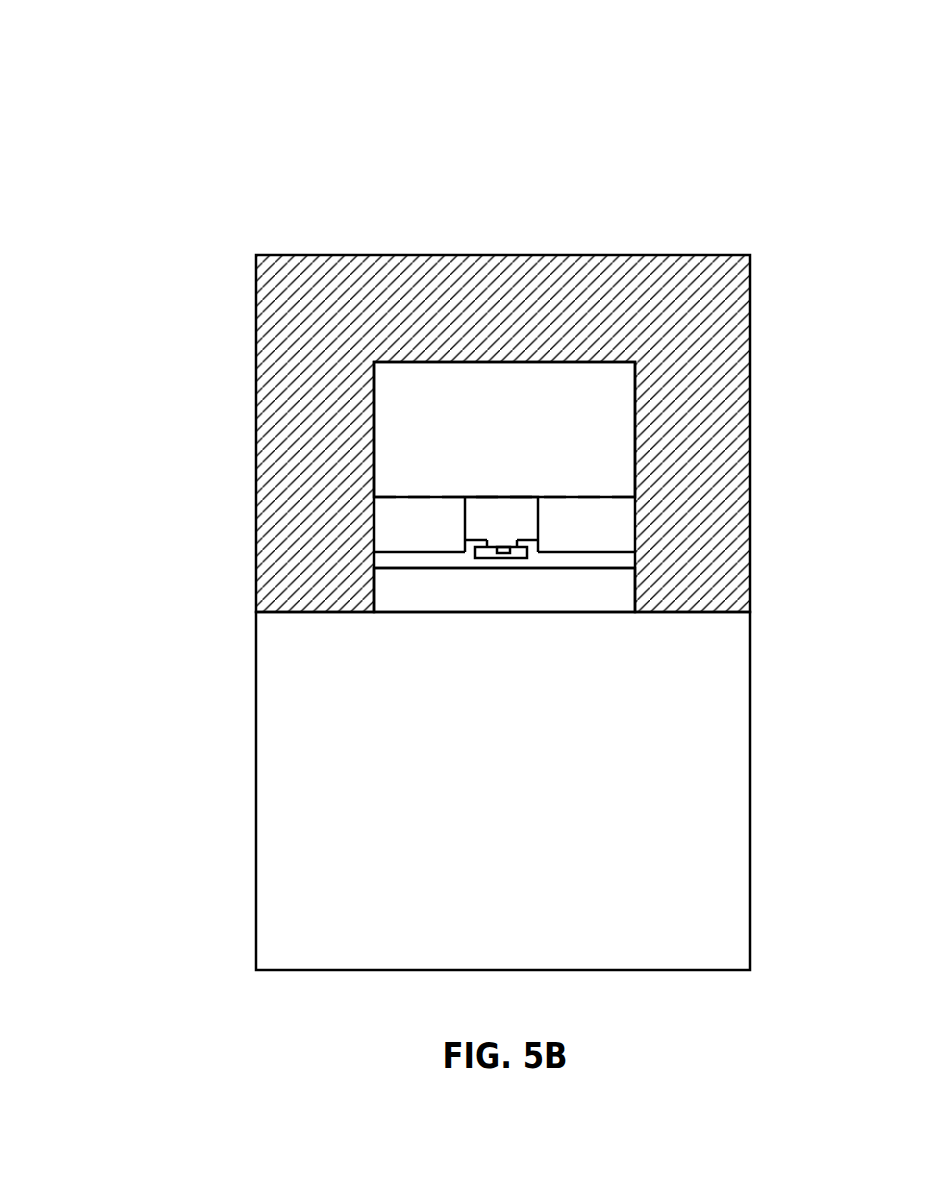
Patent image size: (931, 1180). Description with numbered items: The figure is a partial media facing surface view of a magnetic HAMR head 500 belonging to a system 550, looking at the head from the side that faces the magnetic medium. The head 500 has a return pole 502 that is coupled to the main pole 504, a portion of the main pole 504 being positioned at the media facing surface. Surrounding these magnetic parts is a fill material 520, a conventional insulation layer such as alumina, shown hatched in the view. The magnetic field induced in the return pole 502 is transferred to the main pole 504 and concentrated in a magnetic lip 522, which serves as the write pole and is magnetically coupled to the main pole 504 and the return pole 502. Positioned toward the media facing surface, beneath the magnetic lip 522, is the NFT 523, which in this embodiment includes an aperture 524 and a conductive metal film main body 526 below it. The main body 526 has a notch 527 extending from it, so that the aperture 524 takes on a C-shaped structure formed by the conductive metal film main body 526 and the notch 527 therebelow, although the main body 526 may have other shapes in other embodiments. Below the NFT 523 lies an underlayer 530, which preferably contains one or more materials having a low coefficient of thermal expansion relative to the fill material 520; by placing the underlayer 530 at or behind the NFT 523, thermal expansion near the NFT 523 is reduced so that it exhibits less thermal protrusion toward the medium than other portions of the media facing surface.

The magnetic HAMR head 500 is at (115, 470).
The system 550 is at (113, 117).
The return pole 502 is at (503, 791).
The main pole 504 is at (504, 429).
The fill material 520 is at (628, 290).
The magnetic lip 522 is at (501, 524).
The NFT 523 is at (458, 545).
The aperture 524 is at (537, 543).
The conductive metal film main body 526 is at (635, 558).
The notch 527 is at (513, 552).
The underlayer 530 is at (772, 393).